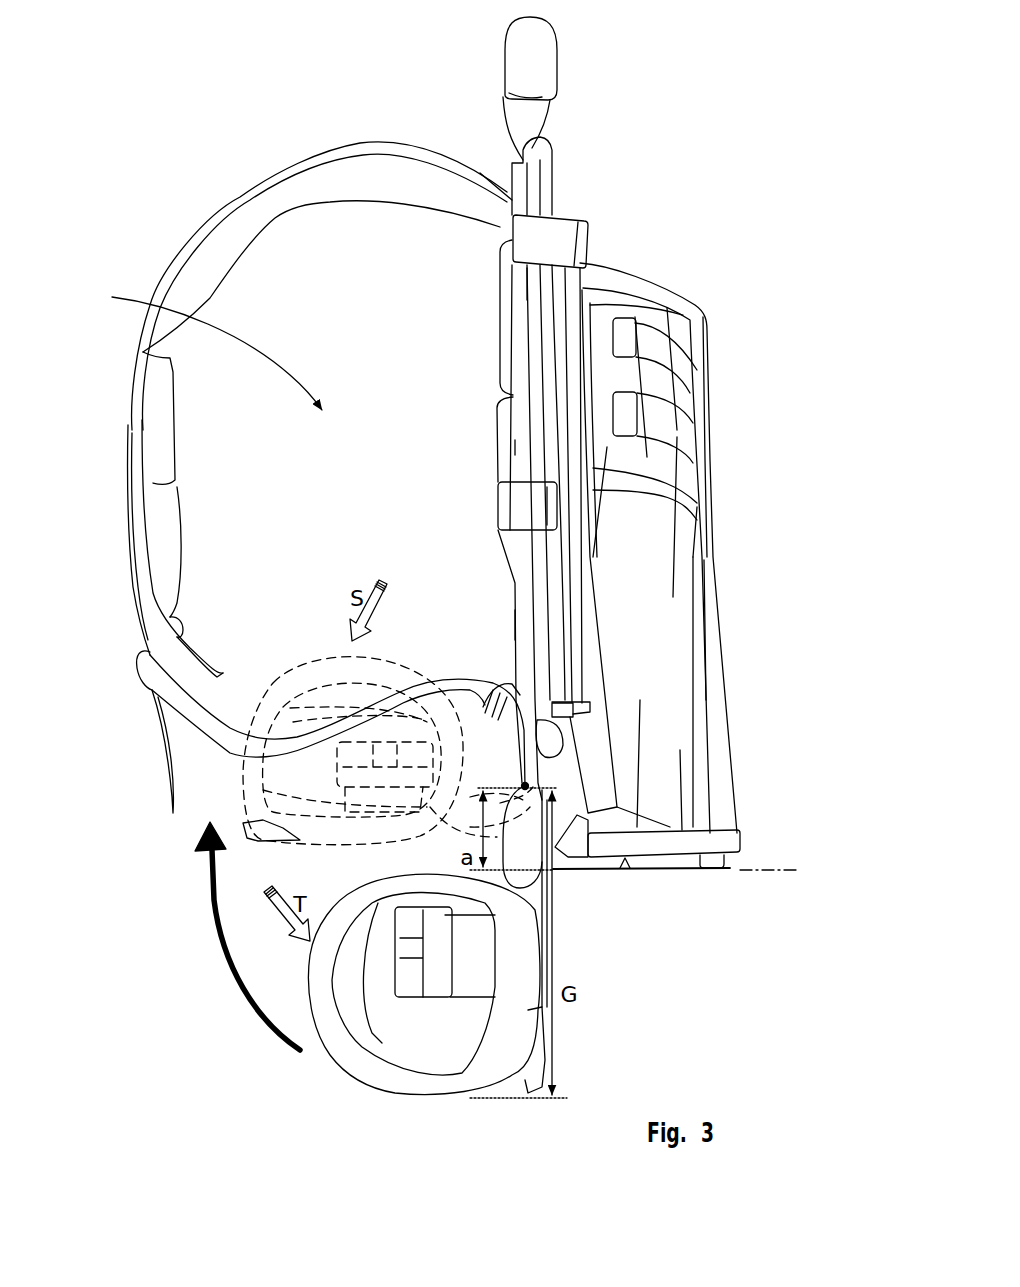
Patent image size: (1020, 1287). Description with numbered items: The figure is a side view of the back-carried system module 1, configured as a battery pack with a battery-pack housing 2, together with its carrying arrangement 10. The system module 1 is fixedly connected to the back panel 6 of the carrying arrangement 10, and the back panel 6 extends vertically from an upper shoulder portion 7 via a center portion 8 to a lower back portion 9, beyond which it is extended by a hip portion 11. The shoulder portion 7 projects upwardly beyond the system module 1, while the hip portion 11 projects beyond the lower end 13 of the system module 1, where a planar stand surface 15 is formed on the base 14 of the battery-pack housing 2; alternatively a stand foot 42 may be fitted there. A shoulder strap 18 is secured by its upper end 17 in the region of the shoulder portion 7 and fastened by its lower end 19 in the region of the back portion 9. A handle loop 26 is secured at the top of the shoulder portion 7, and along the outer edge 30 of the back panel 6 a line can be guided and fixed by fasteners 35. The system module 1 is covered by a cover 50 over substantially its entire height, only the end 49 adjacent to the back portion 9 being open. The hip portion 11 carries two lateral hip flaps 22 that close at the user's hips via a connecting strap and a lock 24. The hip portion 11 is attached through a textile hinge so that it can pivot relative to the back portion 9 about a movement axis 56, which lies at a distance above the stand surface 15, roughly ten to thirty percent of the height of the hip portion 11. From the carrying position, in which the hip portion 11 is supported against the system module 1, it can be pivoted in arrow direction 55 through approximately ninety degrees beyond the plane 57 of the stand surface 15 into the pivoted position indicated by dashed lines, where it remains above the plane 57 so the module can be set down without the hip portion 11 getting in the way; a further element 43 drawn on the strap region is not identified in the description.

The system module 1 is at (641, 601).
The battery-pack housing 2 is at (633, 523).
The back panel 6 is at (566, 184).
The upper shoulder portion 7 is at (532, 278).
The center portion 8 is at (520, 445).
The lower back portion 9 is at (520, 625).
The carrying arrangement 10 is at (198, 346).
The hip portion 11 is at (427, 970).
The lower end 13 is at (684, 868).
The base 14 is at (625, 862).
The stand surface 15 is at (647, 869).
The upper end 17 is at (503, 218).
The shoulder strap 18 is at (135, 430).
The lower end 19 is at (480, 690).
The lateral hip flap 22 is at (413, 1040).
The lock 24 is at (437, 990).
The handle loop 26 is at (542, 70).
The outer edge 30 is at (195, 236).
The fastener 35 is at (580, 233).
The stand foot 42 is at (507, 329).
The pad section 43 is at (497, 425).
The end of the cover 49 is at (733, 858).
The cover 50 is at (723, 720).
The arrow direction 55 is at (218, 943).
The movement axis 56 is at (522, 784).
The plane of the stand surface 57 is at (770, 870).